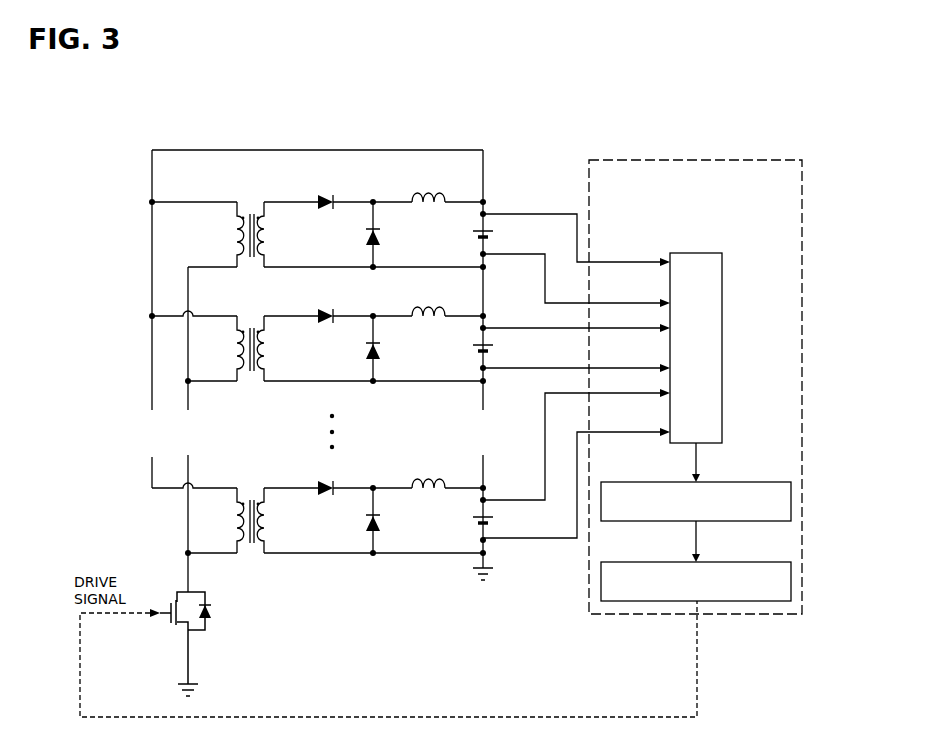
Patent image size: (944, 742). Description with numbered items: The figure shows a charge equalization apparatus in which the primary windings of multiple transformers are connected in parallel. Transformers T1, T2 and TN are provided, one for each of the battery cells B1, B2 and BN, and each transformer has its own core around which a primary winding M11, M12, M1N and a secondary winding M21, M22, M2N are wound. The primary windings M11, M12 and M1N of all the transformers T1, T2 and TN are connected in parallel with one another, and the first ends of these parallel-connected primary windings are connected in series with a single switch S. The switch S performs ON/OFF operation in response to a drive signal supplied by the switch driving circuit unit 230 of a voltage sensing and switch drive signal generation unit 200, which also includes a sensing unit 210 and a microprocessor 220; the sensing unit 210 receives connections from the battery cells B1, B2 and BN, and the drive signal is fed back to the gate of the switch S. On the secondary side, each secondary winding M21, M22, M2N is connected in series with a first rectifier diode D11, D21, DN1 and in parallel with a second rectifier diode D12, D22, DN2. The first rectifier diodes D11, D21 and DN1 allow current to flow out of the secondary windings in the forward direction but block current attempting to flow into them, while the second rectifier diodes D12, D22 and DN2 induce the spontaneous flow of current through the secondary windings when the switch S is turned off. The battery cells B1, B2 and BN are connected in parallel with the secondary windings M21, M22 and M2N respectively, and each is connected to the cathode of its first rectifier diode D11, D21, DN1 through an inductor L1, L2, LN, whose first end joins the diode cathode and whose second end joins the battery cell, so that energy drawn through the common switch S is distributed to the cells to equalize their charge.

The voltage sensing and switch drive signal generation unit 200 is at (697, 160).
The sensing unit 210 is at (722, 351).
The microprocessor 220 is at (791, 501).
The switch driving circuit unit 230 is at (791, 581).
The transformer T1 is at (248, 212).
The transformer T2 is at (248, 326).
The transformer TN is at (248, 498).
The primary winding M11 is at (221, 234).
The secondary winding M21 is at (279, 234).
The primary winding M12 is at (221, 348).
The secondary winding M22 is at (279, 348).
The primary winding M1N is at (220, 520).
The secondary winding M2N is at (280, 520).
The first rectifier diode D11 is at (333, 212).
The second rectifier diode D12 is at (391, 234).
The first rectifier diode D21 is at (333, 326).
The second rectifier diode D22 is at (391, 348).
The first rectifier diode DN1 is at (334, 498).
The second rectifier diode DN2 is at (393, 520).
The inductor L1 is at (428, 189).
The inductor L2 is at (428, 303).
The inductor LN is at (428, 475).
The battery cell B1 is at (497, 234).
The battery cell B2 is at (497, 348).
The battery cell BN is at (497, 520).
The switch S is at (191, 644).